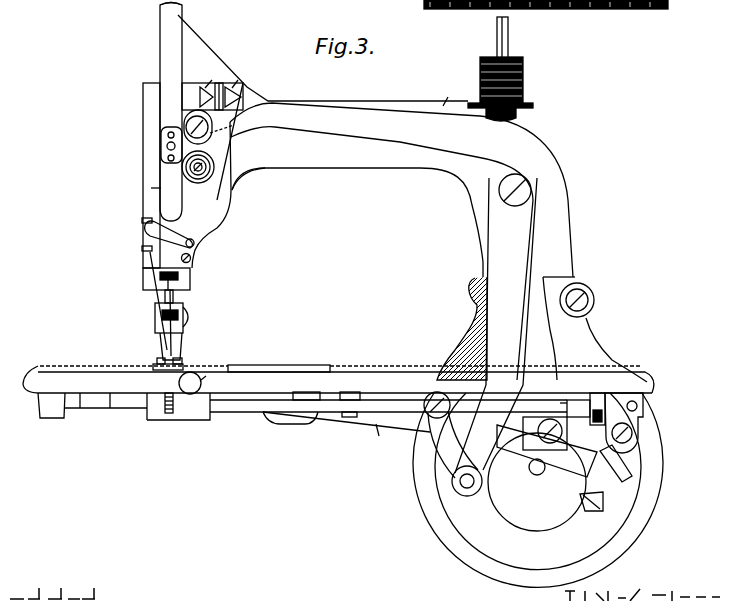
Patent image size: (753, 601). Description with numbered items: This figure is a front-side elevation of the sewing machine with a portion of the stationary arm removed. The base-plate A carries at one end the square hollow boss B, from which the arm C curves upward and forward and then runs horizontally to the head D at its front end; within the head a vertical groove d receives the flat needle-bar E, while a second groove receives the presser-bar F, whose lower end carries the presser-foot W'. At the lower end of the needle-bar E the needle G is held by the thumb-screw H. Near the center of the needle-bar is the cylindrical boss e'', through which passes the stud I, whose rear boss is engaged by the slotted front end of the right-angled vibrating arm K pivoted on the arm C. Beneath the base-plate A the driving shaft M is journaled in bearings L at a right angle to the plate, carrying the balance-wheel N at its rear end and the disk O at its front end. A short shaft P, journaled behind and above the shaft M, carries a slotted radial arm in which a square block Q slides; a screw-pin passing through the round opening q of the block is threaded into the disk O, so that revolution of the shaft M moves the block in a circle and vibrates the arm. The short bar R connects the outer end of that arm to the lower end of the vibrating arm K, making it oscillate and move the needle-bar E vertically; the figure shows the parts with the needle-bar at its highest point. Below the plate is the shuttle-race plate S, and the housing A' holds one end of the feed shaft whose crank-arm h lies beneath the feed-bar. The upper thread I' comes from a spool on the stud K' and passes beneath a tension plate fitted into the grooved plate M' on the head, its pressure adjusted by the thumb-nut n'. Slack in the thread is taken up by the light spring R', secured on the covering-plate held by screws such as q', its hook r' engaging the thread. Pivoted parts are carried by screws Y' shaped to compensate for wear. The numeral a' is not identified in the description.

The base-plate A is at (344, 379).
The housing A' is at (124, 406).
The post a' is at (159, 421).
The square hollow boss B is at (472, 333).
The arm C is at (390, 241).
The housing or head D is at (141, 175).
The needle-bar E is at (171, 112).
The cylindrical boss e'' is at (154, 145).
The presser-bar F is at (192, 383).
The needle G is at (183, 328).
The thumb-screw H is at (192, 282).
The crank-arm h is at (601, 423).
The stud I is at (195, 131).
The upper thread I' is at (301, 105).
The vibrating arm K is at (384, 308).
The stud K' is at (500, 69).
The bearings L is at (205, 98).
The shaft M is at (171, 12).
The horizontally-grooved plate M' is at (206, 77).
The balance-wheel N is at (538, 490).
The thumb-nut n' is at (220, 96).
The circular plate or disk O is at (537, 482).
The short shaft P is at (547, 445).
The square block Q is at (401, 315).
The round opening q is at (228, 128).
The screw q' is at (374, 362).
The short bar R is at (451, 435).
The light spring R' is at (211, 167).
The hook r' is at (230, 133).
The shuttle-race plate S is at (123, 405).
The presser-foot W' is at (393, 397).
The screw Y' is at (441, 369).
The vertical groove d is at (168, 222).